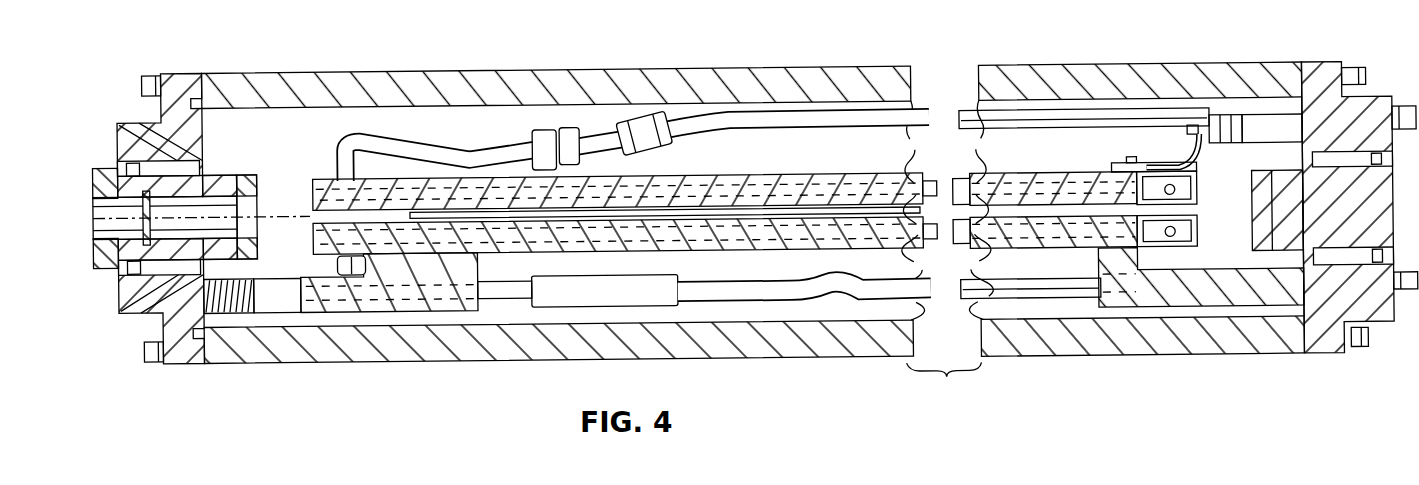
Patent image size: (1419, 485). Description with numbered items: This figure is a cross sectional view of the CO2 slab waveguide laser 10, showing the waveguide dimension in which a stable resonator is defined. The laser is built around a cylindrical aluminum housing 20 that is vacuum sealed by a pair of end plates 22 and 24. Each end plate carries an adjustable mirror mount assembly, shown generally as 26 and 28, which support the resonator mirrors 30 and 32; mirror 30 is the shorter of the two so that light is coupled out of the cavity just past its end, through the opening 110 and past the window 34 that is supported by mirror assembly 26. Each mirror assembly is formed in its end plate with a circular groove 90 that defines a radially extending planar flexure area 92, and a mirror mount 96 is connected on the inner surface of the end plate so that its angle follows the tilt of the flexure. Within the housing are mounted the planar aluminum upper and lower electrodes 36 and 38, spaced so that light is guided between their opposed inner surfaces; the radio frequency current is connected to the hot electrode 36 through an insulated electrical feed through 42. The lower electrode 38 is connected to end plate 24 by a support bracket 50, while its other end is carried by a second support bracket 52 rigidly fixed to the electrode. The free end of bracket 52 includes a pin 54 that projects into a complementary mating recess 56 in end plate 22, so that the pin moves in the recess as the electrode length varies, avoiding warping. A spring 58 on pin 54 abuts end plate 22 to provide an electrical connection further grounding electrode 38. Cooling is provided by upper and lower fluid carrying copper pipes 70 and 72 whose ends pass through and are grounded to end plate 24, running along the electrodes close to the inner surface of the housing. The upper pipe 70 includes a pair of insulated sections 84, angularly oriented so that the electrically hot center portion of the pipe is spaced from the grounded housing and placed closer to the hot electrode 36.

The CO2 slab waveguide laser 10 is at (737, 65).
The cylindrical aluminum housing 20 is at (370, 74).
The end plate 22 is at (178, 77).
The end plate 24 is at (1334, 74).
The adjustable mirror mount assembly 26 is at (112, 323).
The adjustable mirror mount assembly 28 is at (1370, 367).
The resonator mirror 30 is at (257, 188).
The resonator mirror 32 is at (1252, 229).
The window 34 is at (95, 255).
The upper electrode 36 is at (734, 181).
The lower electrode 38 is at (803, 259).
The insulated electrical feed through 42 is at (1230, 120).
The support bracket 50 is at (1180, 311).
The second support bracket 52 is at (350, 313).
The pin 54 is at (210, 328).
The mating recess 56 is at (170, 232).
The spring 58 is at (242, 314).
The upper cooling pipe 70 is at (1065, 121).
The lower cooling pipe 72 is at (1027, 299).
The insulated sections 84 is at (530, 137).
The circular groove 90 is at (115, 168).
The flexure area 92 is at (150, 128).
The mirror mount 96 is at (224, 175).
The opening 110 is at (118, 293).